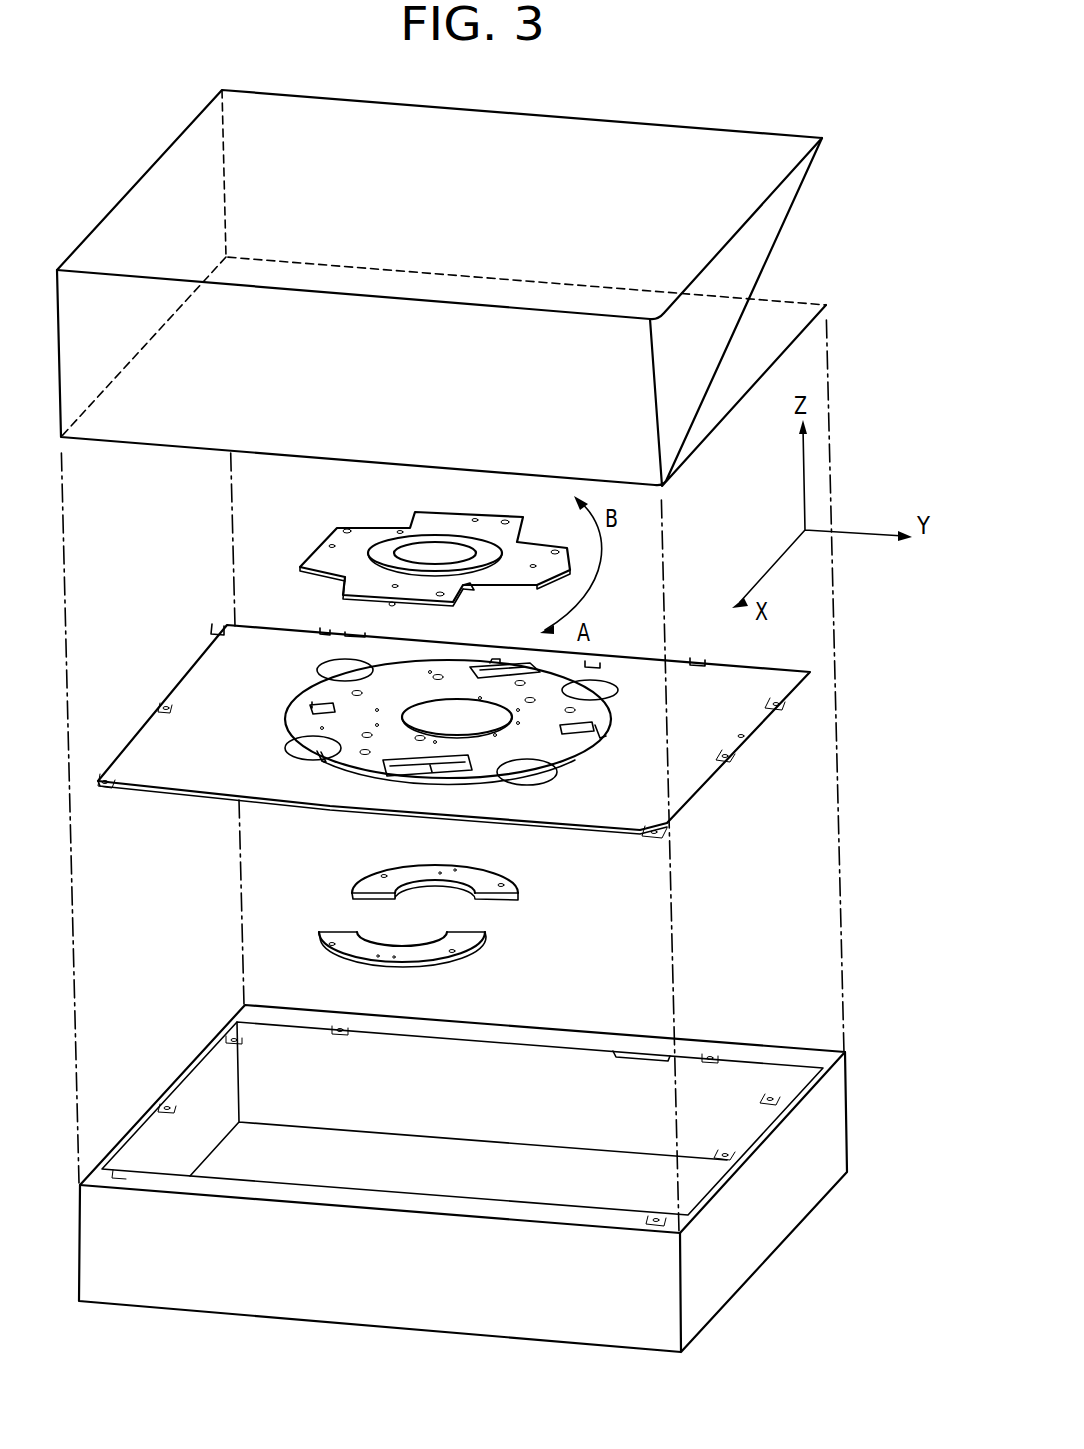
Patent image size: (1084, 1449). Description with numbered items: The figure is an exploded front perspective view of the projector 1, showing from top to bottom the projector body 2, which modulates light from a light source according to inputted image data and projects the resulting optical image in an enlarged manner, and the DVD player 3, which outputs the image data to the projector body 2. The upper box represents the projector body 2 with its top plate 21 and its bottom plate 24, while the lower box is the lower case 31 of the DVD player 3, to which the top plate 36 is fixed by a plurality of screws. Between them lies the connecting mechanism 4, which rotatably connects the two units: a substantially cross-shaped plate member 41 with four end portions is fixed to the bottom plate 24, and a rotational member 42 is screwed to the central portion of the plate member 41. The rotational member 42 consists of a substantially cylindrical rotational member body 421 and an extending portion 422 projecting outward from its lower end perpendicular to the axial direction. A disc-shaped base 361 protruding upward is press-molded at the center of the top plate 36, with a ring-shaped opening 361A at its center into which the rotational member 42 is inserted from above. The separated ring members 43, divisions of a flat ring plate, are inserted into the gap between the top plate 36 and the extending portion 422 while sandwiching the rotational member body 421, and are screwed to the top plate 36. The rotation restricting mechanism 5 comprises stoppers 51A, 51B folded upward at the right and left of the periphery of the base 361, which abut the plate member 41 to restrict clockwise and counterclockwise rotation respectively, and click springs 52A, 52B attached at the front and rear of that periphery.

The projector 1 is at (830, 110).
The projector body 2 is at (838, 205).
The top plate portion 21 is at (800, 266).
The bottom plate 24 is at (153, 428).
The DVD player 3 is at (868, 1061).
The lower case 31 is at (835, 1158).
The top plate 36 is at (677, 797).
The base 361 is at (322, 757).
The opening 361A is at (388, 733).
The connecting mechanism 4 is at (404, 556).
The plate member 41 is at (527, 534).
The rotational member 42 is at (358, 556).
The rotational member body 421 is at (420, 552).
The extending portion 422 is at (472, 588).
The separated ring members 43 is at (497, 958).
The rotation restricting mechanism 5 is at (435, 729).
The stopper 51A is at (575, 760).
The stopper 51B is at (297, 708).
The click spring 52A is at (425, 772).
The click spring 52B is at (470, 658).